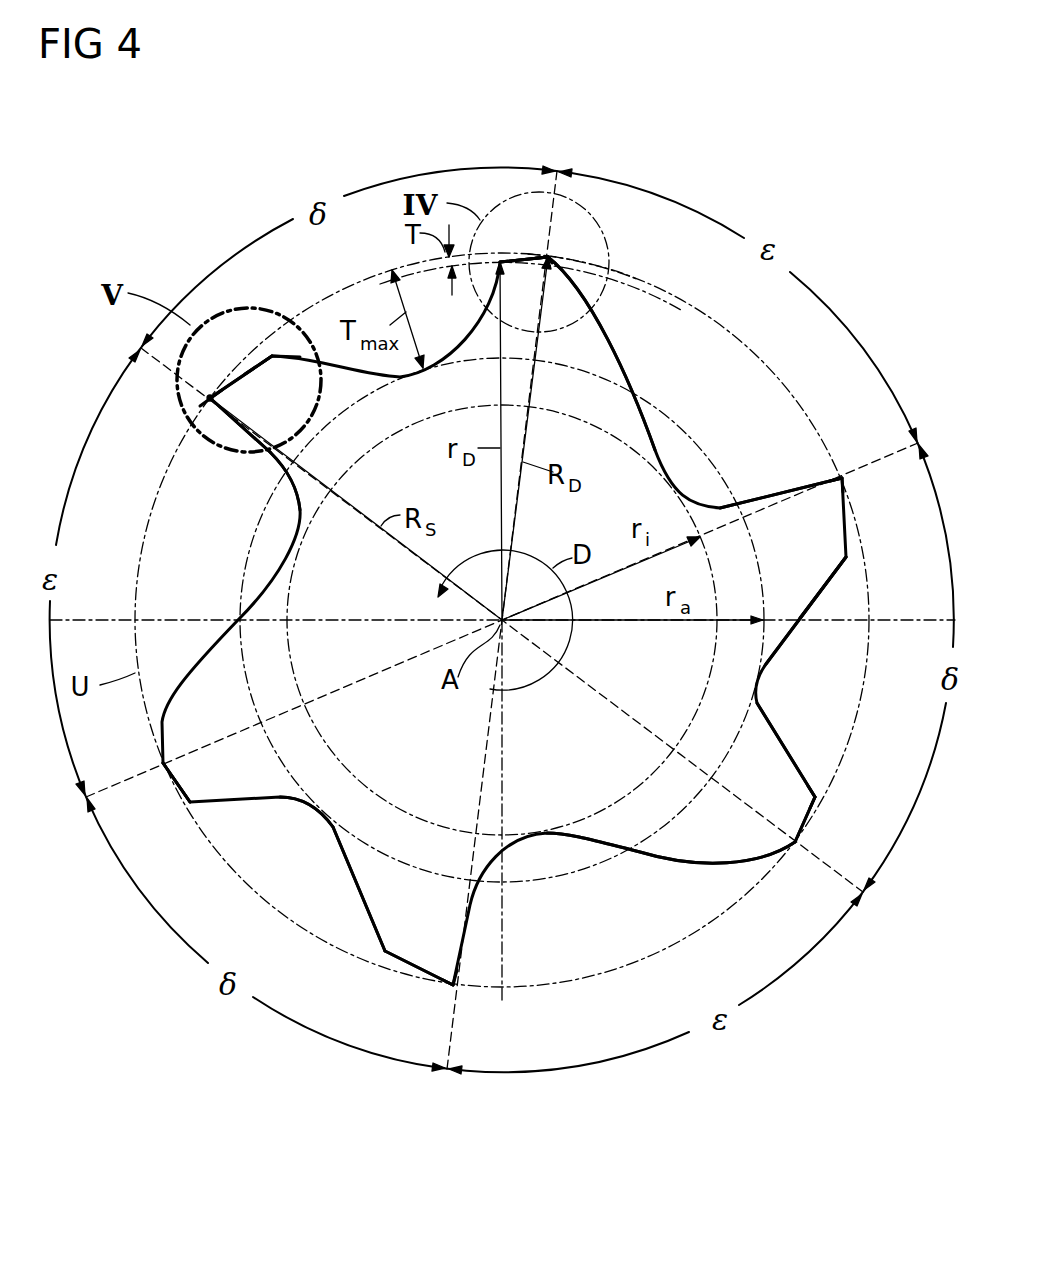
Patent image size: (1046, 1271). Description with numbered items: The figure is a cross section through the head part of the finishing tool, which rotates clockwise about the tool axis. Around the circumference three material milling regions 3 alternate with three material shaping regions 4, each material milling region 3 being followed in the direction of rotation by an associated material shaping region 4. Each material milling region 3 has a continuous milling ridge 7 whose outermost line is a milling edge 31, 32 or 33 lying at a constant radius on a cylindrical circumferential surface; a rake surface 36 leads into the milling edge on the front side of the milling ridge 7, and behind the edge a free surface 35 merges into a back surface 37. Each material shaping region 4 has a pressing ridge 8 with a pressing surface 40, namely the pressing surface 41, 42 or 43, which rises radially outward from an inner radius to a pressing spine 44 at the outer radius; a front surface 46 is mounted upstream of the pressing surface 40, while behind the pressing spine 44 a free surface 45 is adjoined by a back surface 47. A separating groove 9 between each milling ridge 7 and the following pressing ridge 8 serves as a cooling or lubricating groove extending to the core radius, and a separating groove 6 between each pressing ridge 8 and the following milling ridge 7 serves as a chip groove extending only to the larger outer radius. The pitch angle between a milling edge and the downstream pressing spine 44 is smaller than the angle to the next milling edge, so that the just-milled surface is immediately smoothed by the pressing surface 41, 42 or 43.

The material milling region 3 is at (245, 370).
The material shaping region 4 is at (529, 252).
The separating groove 6 is at (250, 547).
The milling ridge 7 is at (257, 423).
The pressing ridge 8 is at (580, 255).
The separating groove 9 is at (280, 855).
The milling edge 31 is at (210, 398).
The milling edge 32 is at (842, 477).
The milling edge 33 is at (455, 987).
The free surface 35 is at (260, 363).
The rake surface 36 is at (273, 453).
The back surface 37 is at (293, 356).
The pressing surface 40 is at (548, 257).
The pressing surface 41 is at (515, 257).
The pressing surface 42 is at (820, 813).
The pressing surface 43 is at (177, 798).
The pressing spine 44 is at (562, 250).
The free surface 45 is at (566, 257).
The front surface 46 is at (393, 268).
The back surface 47 is at (557, 292).